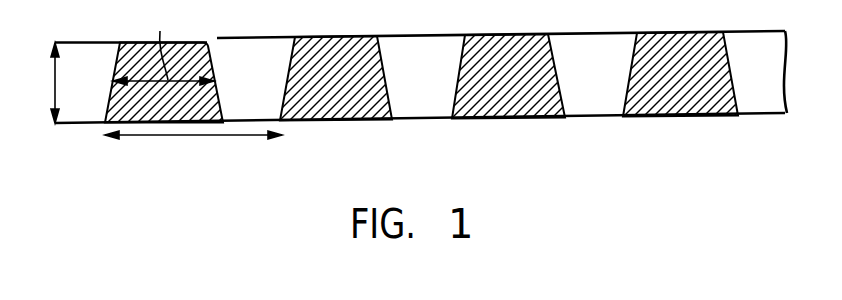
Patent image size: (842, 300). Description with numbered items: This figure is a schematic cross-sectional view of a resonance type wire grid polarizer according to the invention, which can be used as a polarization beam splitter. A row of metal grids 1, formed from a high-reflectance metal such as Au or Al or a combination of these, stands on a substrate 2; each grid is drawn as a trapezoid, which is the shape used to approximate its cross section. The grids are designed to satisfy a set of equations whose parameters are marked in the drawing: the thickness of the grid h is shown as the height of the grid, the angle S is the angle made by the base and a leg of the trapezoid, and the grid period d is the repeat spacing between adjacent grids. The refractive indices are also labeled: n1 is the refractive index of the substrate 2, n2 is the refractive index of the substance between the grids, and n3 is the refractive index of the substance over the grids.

The metal grid 1 is at (724, 44).
The substrate 2 is at (698, 113).
The thickness of the grid h is at (40, 83).
The angle made by the base and a leg of the grid S is at (115, 101).
The grid period d is at (213, 135).
The refractive index of the substrate n1 is at (424, 135).
The refractive index of a substance between grids n2 is at (424, 79).
The refractive index of a substance over the grids n3 is at (424, 14).